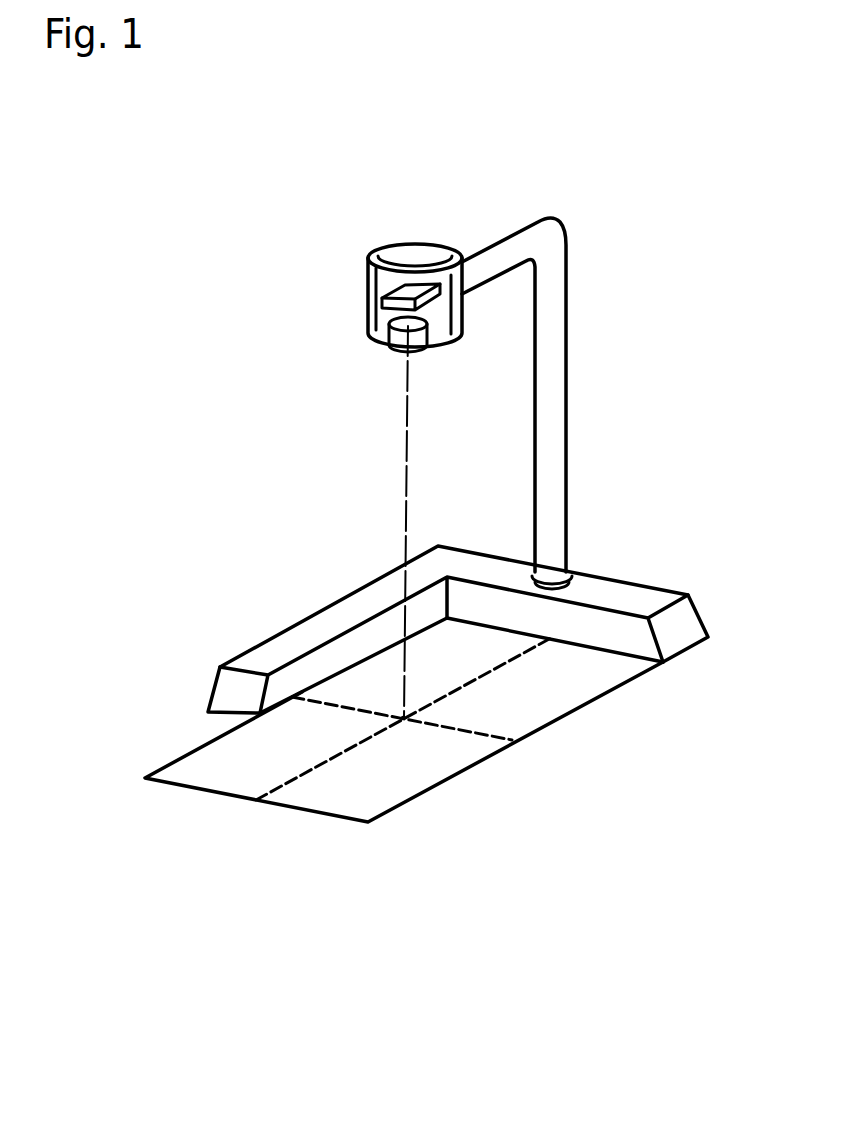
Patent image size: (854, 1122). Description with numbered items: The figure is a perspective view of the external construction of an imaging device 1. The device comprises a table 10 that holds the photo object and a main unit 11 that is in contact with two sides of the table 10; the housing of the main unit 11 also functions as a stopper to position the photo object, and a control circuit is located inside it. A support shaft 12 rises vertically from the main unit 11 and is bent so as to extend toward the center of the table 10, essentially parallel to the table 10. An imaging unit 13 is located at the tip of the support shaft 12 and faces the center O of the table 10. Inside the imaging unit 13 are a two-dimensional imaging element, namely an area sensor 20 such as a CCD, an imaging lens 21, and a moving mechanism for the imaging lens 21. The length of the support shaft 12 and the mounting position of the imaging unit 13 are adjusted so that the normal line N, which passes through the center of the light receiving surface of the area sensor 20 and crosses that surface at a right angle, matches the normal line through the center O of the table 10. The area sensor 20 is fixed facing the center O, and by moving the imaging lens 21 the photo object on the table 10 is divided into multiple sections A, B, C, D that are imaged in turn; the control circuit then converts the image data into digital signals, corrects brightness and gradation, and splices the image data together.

The imaging device 1 is at (610, 446).
The table 10 is at (448, 780).
The main unit 11 is at (610, 580).
The support shaft 12 is at (552, 308).
The imaging unit 13 is at (423, 243).
The area sensor 20 is at (400, 283).
The imaging lens 21 is at (407, 357).
The normal line N is at (407, 512).
The center of the table O is at (403, 718).
The section A is at (363, 680).
The section B is at (573, 698).
The section C is at (322, 797).
The section D is at (212, 777).